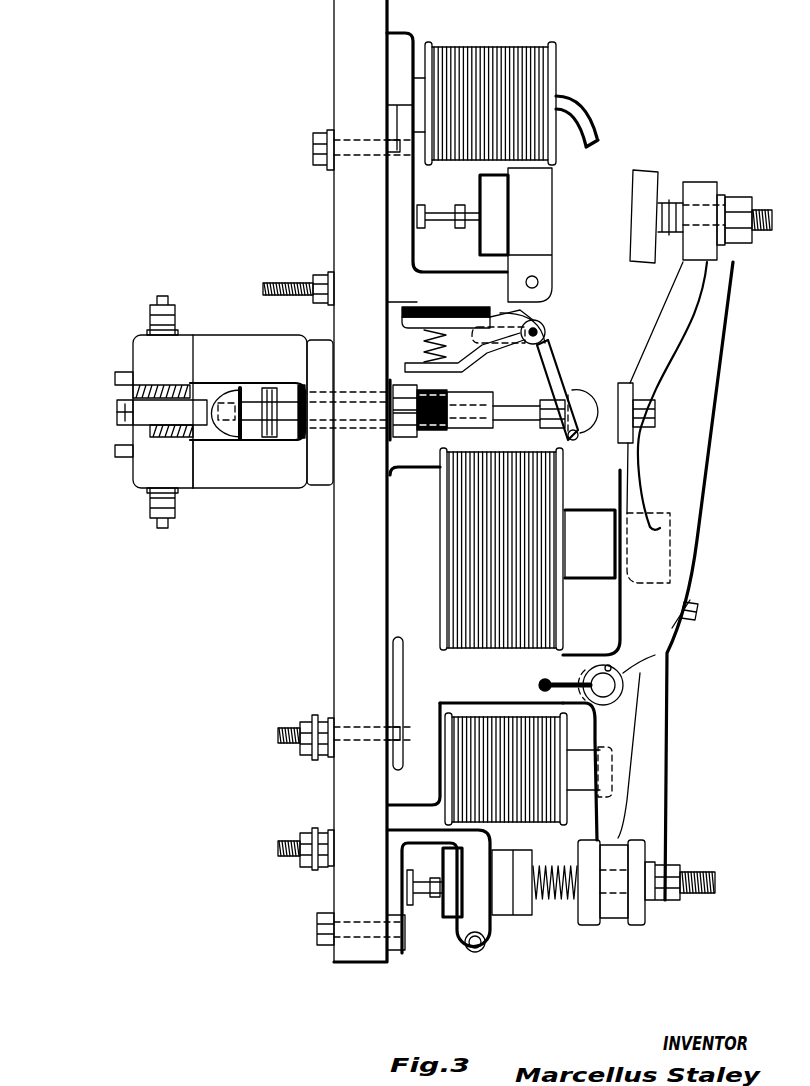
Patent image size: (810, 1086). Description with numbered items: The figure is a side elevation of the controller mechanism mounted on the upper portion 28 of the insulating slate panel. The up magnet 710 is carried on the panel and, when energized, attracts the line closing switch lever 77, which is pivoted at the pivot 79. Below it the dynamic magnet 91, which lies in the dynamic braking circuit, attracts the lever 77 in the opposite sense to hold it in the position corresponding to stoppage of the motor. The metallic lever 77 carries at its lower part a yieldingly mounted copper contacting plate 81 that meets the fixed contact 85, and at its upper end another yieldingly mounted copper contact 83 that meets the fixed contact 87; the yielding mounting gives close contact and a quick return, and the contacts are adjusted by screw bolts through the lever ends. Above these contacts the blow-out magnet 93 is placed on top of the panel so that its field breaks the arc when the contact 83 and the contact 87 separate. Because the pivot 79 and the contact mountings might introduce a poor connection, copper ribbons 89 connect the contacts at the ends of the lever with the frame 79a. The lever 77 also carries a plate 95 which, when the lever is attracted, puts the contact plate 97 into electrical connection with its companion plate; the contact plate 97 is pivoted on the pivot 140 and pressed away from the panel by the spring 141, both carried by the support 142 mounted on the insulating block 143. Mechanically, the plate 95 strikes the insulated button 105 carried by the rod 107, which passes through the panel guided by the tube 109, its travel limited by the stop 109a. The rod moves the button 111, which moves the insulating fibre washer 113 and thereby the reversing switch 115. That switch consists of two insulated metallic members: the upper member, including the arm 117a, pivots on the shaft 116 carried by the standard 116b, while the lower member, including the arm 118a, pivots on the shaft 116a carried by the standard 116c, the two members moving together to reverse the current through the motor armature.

The upper portion of panel 28 is at (355, 71).
The blow-out magnet 93 is at (517, 115).
The fixed contact 87 is at (565, 207).
The yieldingly mounted copper contact 83 is at (645, 218).
The line closing switch lever 77 is at (660, 445).
The plate 95 is at (633, 392).
The up magnet 710 is at (530, 592).
The dynamic magnet 91 is at (522, 822).
The pivot 79 is at (600, 692).
The frame 79a is at (538, 686).
The copper ribbons 89 is at (670, 652).
The fixed contact 85 is at (500, 915).
The copper contacting plate 81 is at (522, 905).
The shaft 116 is at (163, 300).
The shaft 116a is at (163, 528).
The standard 116b is at (225, 345).
The standard 116c is at (245, 478).
The arm of upper reversing switch member 117a is at (133, 392).
The fibre washer 113 is at (190, 406).
The arm of lower reversing switch member 118a is at (150, 430).
The reversing switch 115 is at (115, 452).
The button 111 is at (230, 395).
The stop 109a is at (262, 432).
The tube 109 is at (477, 425).
The rod 107 is at (520, 415).
The insulating block 143 is at (543, 312).
The support 142 is at (510, 350).
The pivot 140 is at (545, 337).
The spring 141 is at (445, 345).
The contact plate 97 is at (572, 383).
The insulated button 105 is at (598, 436).